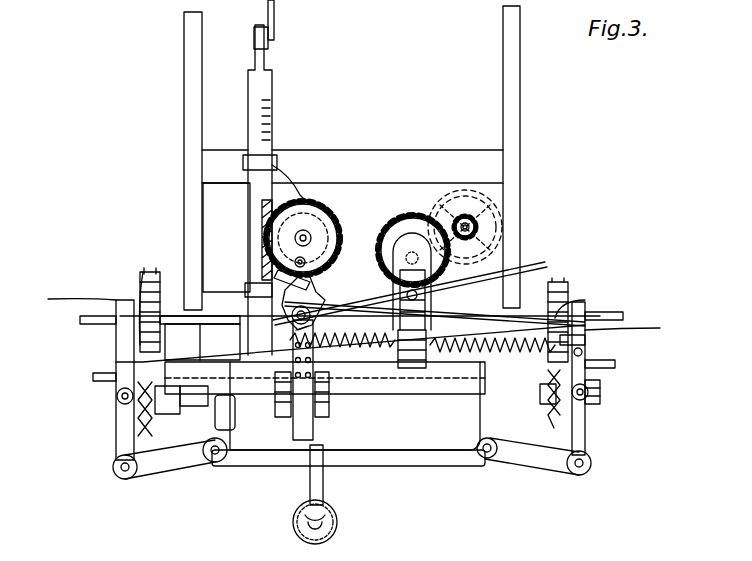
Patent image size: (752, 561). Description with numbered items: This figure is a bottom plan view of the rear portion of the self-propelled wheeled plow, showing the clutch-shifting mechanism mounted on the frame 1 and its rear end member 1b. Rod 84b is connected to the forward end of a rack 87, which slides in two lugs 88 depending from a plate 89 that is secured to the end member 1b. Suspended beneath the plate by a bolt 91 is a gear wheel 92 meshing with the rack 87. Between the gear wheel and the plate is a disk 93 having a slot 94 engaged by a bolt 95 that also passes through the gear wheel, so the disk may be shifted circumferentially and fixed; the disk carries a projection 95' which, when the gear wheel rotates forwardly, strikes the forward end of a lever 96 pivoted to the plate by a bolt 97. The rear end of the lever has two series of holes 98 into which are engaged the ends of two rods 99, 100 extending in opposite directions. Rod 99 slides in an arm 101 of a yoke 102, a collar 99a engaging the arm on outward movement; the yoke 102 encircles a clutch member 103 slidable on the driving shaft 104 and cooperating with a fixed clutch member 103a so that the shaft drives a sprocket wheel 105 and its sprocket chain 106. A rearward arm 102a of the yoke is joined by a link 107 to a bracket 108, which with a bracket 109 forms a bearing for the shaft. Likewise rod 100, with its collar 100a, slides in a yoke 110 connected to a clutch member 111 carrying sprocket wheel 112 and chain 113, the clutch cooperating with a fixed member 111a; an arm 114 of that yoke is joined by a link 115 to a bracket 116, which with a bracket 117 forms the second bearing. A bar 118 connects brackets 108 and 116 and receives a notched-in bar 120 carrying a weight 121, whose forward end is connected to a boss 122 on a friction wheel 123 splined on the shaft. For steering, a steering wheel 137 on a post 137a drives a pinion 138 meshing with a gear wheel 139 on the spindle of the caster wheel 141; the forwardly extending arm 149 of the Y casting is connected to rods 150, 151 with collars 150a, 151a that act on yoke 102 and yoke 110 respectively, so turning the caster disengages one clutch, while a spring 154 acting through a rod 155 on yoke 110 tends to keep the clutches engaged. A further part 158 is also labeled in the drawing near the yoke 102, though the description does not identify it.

The frame 1 is at (184, 200).
The rear end member 1b is at (338, 300).
The rod 84b is at (275, 8).
The rack 87 is at (272, 110).
The lugs 88 is at (248, 155).
The plate 89 is at (300, 160).
The bolt 91 is at (295, 238).
The gear wheel 92 is at (262, 220).
The disk 93 is at (328, 236).
The slot 94 is at (328, 225).
The bolt 95 is at (258, 259).
The projection 95' is at (258, 277).
The lever 96 is at (312, 326).
The bolt 97 is at (318, 318).
The holes 98 is at (345, 346).
The rod 99 is at (615, 364).
The collar 99a is at (610, 338).
The rod 100 is at (93, 377).
The collar 100a is at (130, 360).
The arm 101 is at (584, 353).
The yoke 102 is at (585, 417).
The rearwardly extending arm 102a is at (585, 444).
The clutch member 103 is at (600, 394).
The clutch member 103a is at (545, 404).
The driving shaft 104 is at (433, 394).
The sprocket wheel 105 is at (554, 428).
The sprocket chain 106 is at (568, 284).
The link 107 is at (545, 466).
The bracket 108 is at (478, 435).
The bracket 109 is at (478, 361).
The yoke 110 is at (116, 411).
The clutch member 111 is at (162, 414).
The clutch member 111a is at (190, 408).
The sprocket wheel 112 is at (146, 426).
The sprocket chain 113 is at (140, 289).
The arm 114 is at (113, 446).
The link 115 is at (173, 462).
The bracket 116 is at (226, 430).
The bracket 117 is at (206, 337).
The bar 118 is at (437, 466).
The bar 120 is at (323, 485).
The weight 121 is at (337, 524).
The boss 122 is at (316, 410).
The friction wheel 123 is at (282, 450).
The steering wheel 137 is at (502, 240).
The post 137a is at (476, 227).
The pinion 138 is at (470, 222).
The gear wheel 139 is at (420, 215).
The caster wheel 141 is at (398, 355).
The forwardly extending arm 149 is at (545, 262).
The rod 150 is at (623, 316).
The collar 150a is at (585, 300).
The rod 151 is at (80, 320).
The collar 151a is at (67, 297).
The spring 154 is at (372, 400).
The rod 155 is at (150, 300).
The block 158 is at (585, 342).